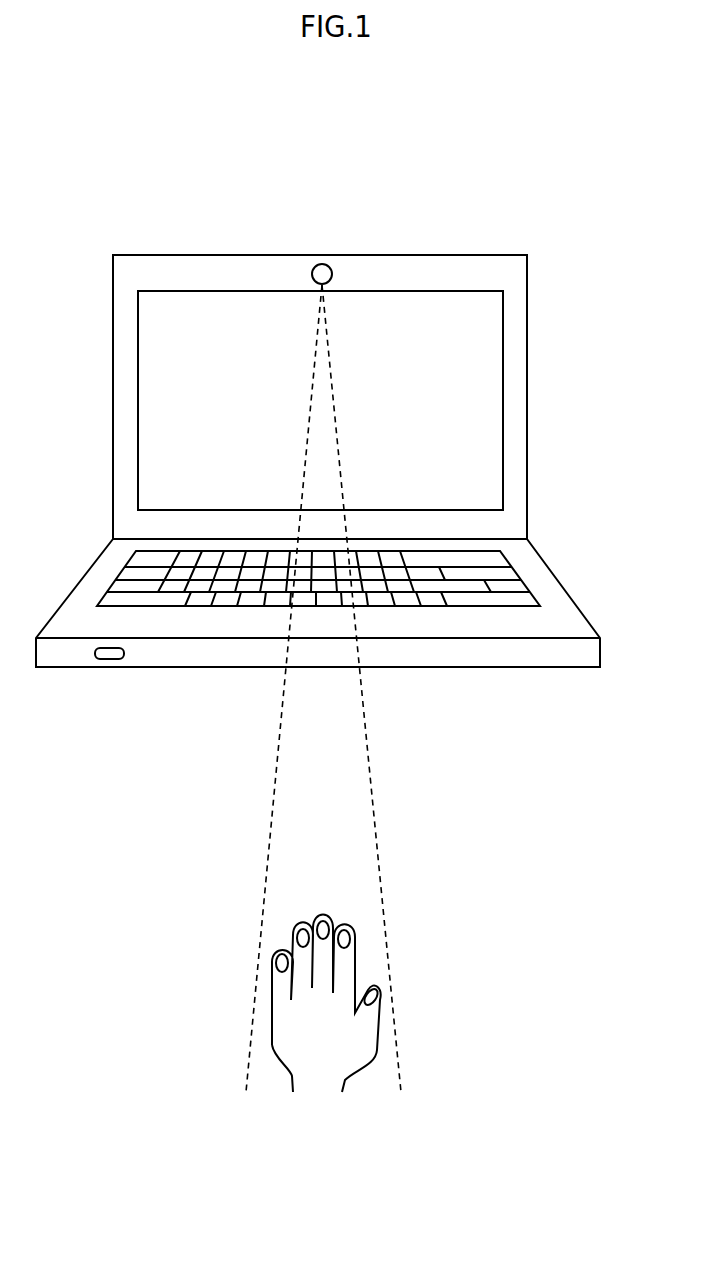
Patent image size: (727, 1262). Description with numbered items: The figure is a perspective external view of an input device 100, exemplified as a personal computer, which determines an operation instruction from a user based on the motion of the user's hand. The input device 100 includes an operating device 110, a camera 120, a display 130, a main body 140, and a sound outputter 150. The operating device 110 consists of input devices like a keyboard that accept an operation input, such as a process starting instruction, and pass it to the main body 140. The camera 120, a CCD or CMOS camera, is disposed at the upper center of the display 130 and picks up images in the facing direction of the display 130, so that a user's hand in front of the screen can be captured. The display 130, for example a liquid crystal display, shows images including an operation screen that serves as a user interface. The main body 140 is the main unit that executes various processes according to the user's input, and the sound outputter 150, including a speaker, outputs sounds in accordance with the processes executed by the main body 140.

The input device 100 is at (210, 184).
The operating device 110 is at (533, 592).
The camera 120 is at (321, 263).
The display 130 is at (505, 364).
The main body 140 is at (452, 668).
The sound outputter 150 is at (117, 662).